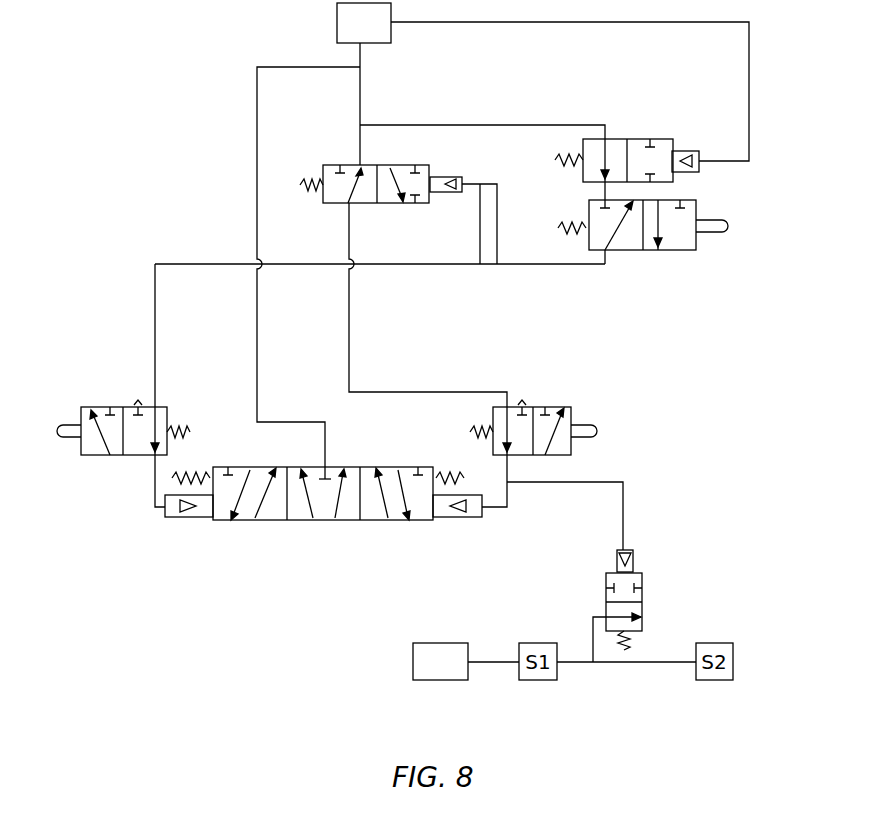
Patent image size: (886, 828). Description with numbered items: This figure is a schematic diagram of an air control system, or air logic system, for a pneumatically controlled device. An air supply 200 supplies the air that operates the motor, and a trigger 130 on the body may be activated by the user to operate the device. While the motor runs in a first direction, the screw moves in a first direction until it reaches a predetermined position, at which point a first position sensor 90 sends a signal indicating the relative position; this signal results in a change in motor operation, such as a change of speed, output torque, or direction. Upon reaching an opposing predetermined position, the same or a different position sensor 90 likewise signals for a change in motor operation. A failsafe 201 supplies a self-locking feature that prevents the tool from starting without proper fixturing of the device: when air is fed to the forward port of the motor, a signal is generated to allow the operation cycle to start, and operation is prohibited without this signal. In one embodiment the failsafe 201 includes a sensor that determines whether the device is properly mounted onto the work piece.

The air supply 200 is at (347, 34).
The position sensor 90 is at (98, 455).
The trigger 130 is at (676, 250).
The failsafe 201 is at (742, 597).